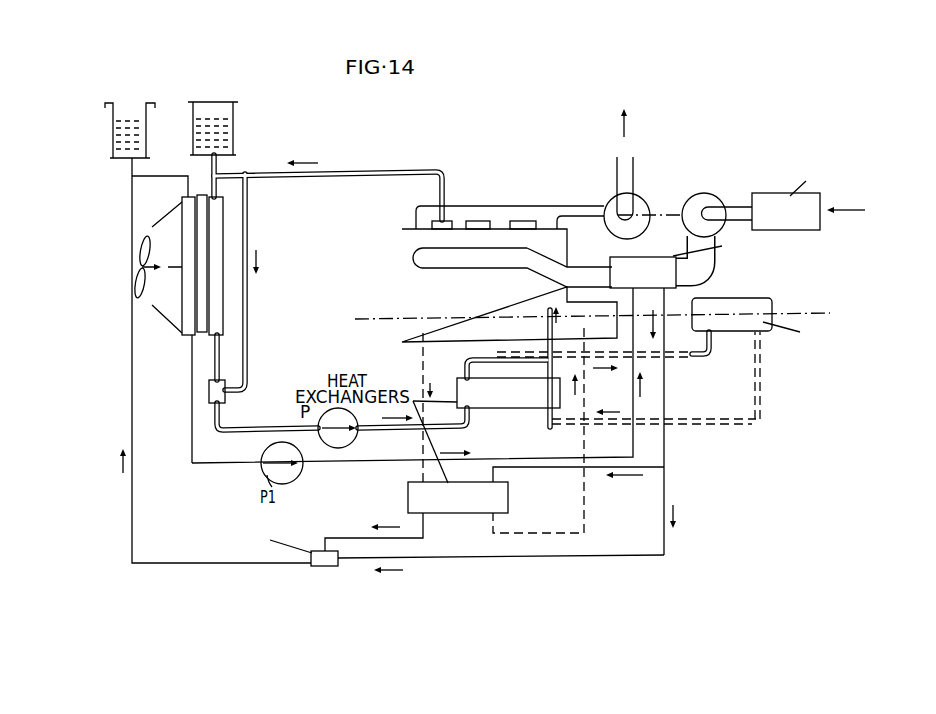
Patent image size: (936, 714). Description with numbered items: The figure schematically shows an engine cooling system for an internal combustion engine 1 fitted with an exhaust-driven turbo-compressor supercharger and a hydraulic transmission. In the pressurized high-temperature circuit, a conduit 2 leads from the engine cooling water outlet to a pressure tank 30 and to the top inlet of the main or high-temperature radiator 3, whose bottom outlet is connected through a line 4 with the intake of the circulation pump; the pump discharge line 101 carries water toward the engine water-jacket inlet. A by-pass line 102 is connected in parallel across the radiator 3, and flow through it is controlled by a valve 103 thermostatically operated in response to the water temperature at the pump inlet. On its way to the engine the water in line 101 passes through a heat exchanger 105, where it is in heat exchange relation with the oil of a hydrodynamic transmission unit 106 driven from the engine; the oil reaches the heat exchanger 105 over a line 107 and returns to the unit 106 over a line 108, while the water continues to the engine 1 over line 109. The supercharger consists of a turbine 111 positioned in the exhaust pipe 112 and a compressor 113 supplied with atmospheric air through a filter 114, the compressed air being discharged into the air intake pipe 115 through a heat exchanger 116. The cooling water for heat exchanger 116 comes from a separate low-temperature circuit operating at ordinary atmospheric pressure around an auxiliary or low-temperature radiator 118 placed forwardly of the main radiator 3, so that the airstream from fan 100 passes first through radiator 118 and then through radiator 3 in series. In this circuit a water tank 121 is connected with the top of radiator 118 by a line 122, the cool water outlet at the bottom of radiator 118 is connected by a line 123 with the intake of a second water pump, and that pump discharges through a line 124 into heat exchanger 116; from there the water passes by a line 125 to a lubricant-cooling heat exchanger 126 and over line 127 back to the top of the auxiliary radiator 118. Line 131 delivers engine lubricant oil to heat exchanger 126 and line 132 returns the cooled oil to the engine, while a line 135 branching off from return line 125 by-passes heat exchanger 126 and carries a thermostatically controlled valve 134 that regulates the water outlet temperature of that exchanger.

The internal combustion engine 1 is at (407, 293).
The conduit 2 is at (367, 168).
The main or high-temperature radiator 3 is at (223, 319).
The line 4 is at (219, 372).
The pressure tank 30 is at (227, 144).
The fan 100 is at (140, 274).
The discharge line 101 is at (385, 427).
The by-pass line 102 is at (248, 303).
The valve 103 is at (208, 393).
The heat exchanger 105 is at (517, 405).
The hydrodynamic transmission unit 106 is at (748, 306).
The line 107 is at (708, 424).
The line 108 is at (692, 355).
The line 109 is at (545, 332).
The turbine 111 is at (641, 203).
The exhaust pipe 112 is at (558, 205).
The compressor 113 is at (705, 197).
The filter 114 is at (762, 203).
The air intake pipe 115 is at (482, 260).
The heat exchanger 116 is at (645, 268).
The auxiliary or low-temperature radiator 118 is at (190, 333).
The water tank 121 is at (115, 140).
The line 122 is at (167, 177).
The line 123 is at (191, 384).
The line 124 is at (357, 463).
The line 125 is at (664, 400).
The lubricant-cooling heat exchanger 126 is at (463, 505).
The line 127 is at (132, 398).
The line 131 is at (423, 385).
The line 132 is at (586, 513).
The thermostatically controlled valve 134 is at (330, 567).
The line 135 is at (562, 556).